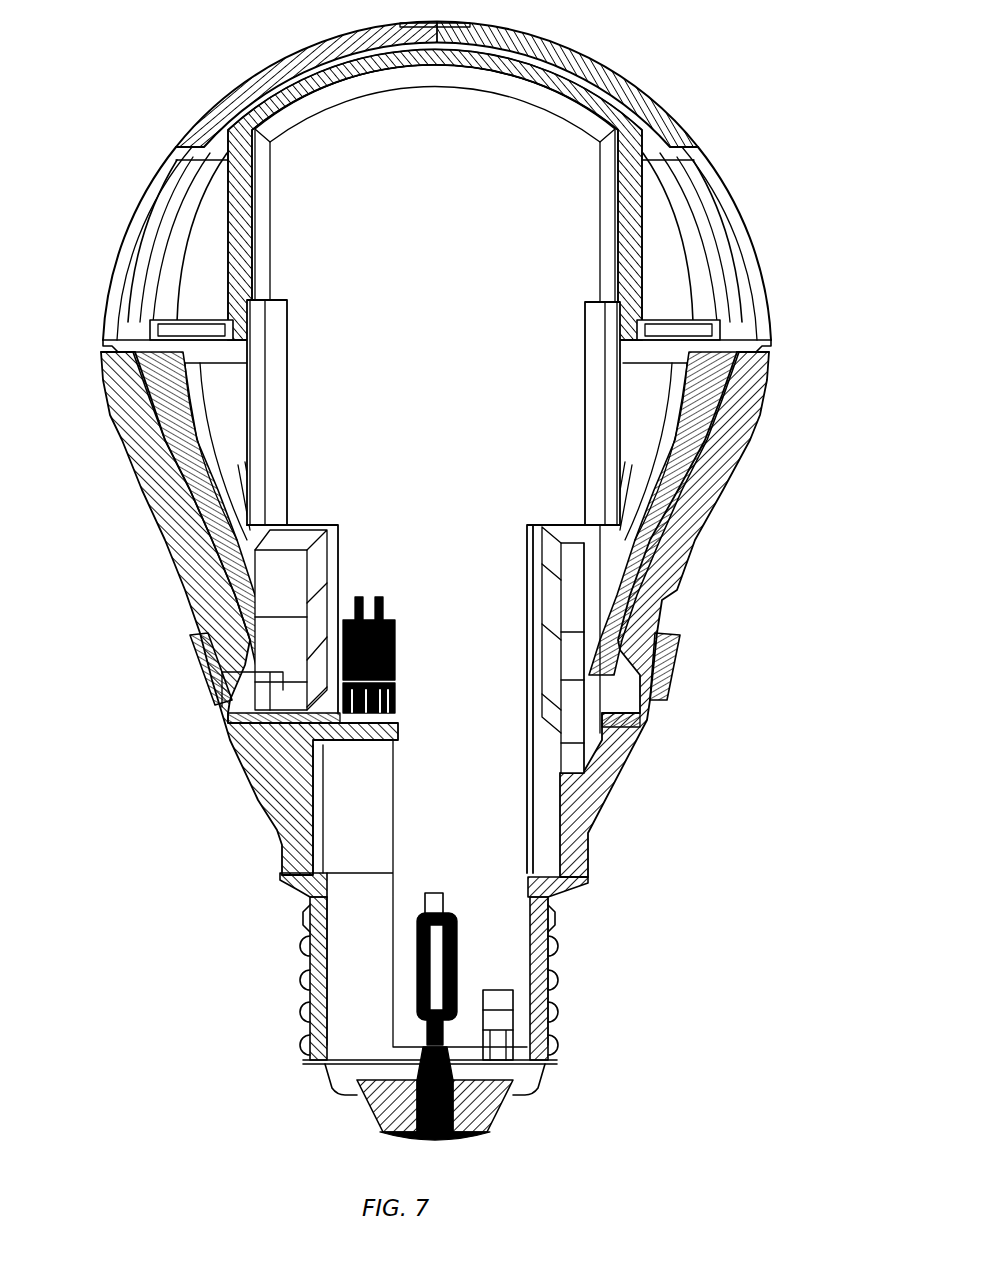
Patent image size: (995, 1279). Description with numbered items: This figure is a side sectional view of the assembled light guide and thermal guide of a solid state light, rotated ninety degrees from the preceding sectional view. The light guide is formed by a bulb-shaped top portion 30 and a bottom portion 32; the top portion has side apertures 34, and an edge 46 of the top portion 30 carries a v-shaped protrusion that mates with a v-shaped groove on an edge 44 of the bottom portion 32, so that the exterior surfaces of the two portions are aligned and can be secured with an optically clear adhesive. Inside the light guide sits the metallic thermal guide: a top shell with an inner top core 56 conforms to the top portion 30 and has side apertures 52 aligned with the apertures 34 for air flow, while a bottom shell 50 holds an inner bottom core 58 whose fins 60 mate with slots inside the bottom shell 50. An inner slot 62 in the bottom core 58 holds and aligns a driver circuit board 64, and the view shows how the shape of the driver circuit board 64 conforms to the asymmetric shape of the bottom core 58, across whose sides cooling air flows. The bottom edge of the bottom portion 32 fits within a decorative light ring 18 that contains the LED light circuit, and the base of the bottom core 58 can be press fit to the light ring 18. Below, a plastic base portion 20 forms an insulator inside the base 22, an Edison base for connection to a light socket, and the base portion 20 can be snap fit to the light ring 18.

The light ring 18 is at (658, 728).
The base portion 20 is at (570, 897).
The base 22 is at (565, 990).
The top portion 30 is at (642, 88).
The bottom portion 32 is at (720, 493).
The side apertures 34 is at (741, 247).
The edge 44 is at (767, 358).
The edge 46 is at (760, 373).
The bottom shell 50 is at (212, 505).
The side apertures 52 is at (183, 188).
The inner top core 56 is at (222, 248).
The bottom core 58 is at (257, 427).
The fins 60 is at (222, 388).
The inner slot 62 is at (588, 305).
The driver circuit board 64 is at (313, 122).